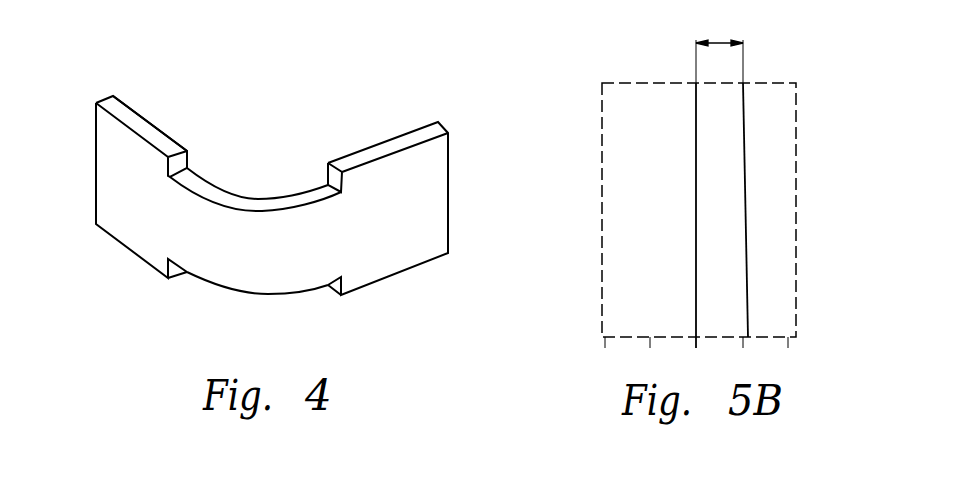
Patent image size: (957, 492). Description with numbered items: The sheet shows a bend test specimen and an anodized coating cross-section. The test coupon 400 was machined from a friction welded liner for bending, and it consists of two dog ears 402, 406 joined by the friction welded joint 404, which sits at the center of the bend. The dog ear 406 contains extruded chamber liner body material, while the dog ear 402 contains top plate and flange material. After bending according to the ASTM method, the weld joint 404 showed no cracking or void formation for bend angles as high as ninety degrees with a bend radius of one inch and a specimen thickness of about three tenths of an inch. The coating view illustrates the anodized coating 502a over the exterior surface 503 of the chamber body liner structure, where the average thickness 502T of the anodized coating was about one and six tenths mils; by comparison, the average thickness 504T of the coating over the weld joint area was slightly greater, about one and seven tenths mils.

In FIG. 4, the test coupon 400 is at (265, 74).
In FIG. 4, the dog ear 402 is at (110, 186).
In FIG. 4, the friction welded joint 404 is at (258, 283).
In FIG. 4, the dog ear 406 is at (436, 197).
In FIG. 5B, the average thickness of anodized coating 502T is at (722, 47).
In FIG. 5B, the average thickness of anodized coating 504T is at (696, 414).
In FIG. 5B, the exterior surface 503 is at (696, 197).
In FIG. 5B, the anodized coating 502a is at (735, 217).